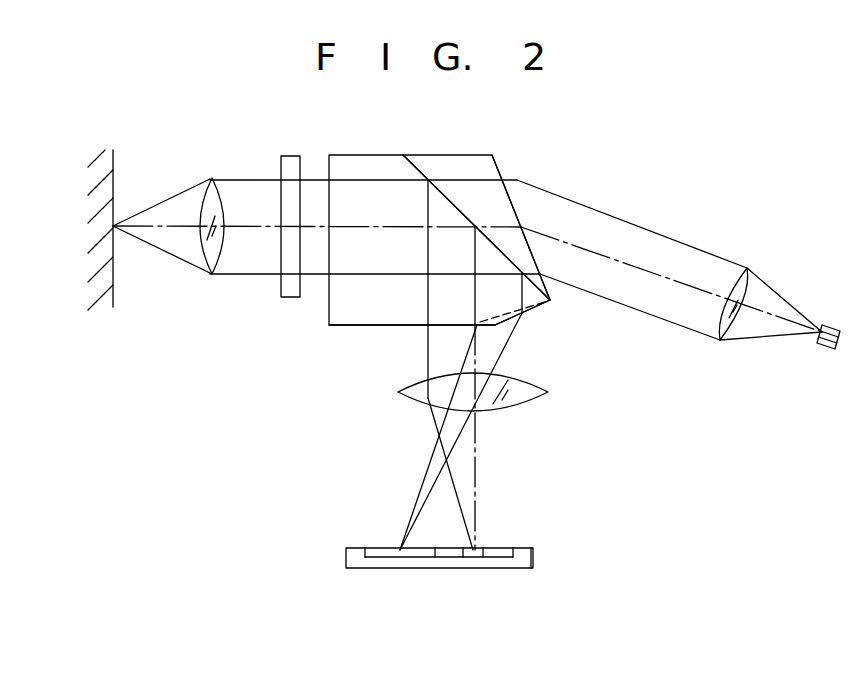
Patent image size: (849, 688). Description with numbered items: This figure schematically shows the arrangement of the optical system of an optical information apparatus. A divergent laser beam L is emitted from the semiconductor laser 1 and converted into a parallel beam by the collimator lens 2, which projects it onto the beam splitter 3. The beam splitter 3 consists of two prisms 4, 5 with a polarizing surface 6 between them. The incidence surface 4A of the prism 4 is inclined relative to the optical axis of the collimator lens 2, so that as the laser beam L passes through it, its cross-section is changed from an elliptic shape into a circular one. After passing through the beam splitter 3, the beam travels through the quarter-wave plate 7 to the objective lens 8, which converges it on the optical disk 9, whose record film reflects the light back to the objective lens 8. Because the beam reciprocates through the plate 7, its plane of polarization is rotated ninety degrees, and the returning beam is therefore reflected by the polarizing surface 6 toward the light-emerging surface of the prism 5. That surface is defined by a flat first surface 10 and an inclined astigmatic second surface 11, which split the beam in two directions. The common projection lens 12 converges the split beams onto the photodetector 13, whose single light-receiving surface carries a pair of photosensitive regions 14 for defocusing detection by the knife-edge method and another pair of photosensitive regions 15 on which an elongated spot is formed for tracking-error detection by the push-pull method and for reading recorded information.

The semiconductor laser 1 is at (826, 350).
The collimator lens 2 is at (745, 267).
The beam splitter 3 is at (446, 244).
The prism 4 is at (491, 163).
The incidence surface 4A is at (515, 202).
The prism 5 is at (356, 167).
The polarizing surface 6 is at (416, 167).
The 1/4 wavelength plate 7 is at (293, 163).
The objective lens 8 is at (218, 200).
The optical disk 9 is at (117, 178).
The first light beam-emerging surface 10 is at (447, 325).
The second light beam-emerging surface 11 is at (540, 311).
The projection lens 12 is at (548, 394).
The photodetector 13 is at (452, 577).
The photosensitive regions 14 is at (480, 557).
The photosensitive regions 15 is at (412, 558).
The laser beam L is at (767, 335).